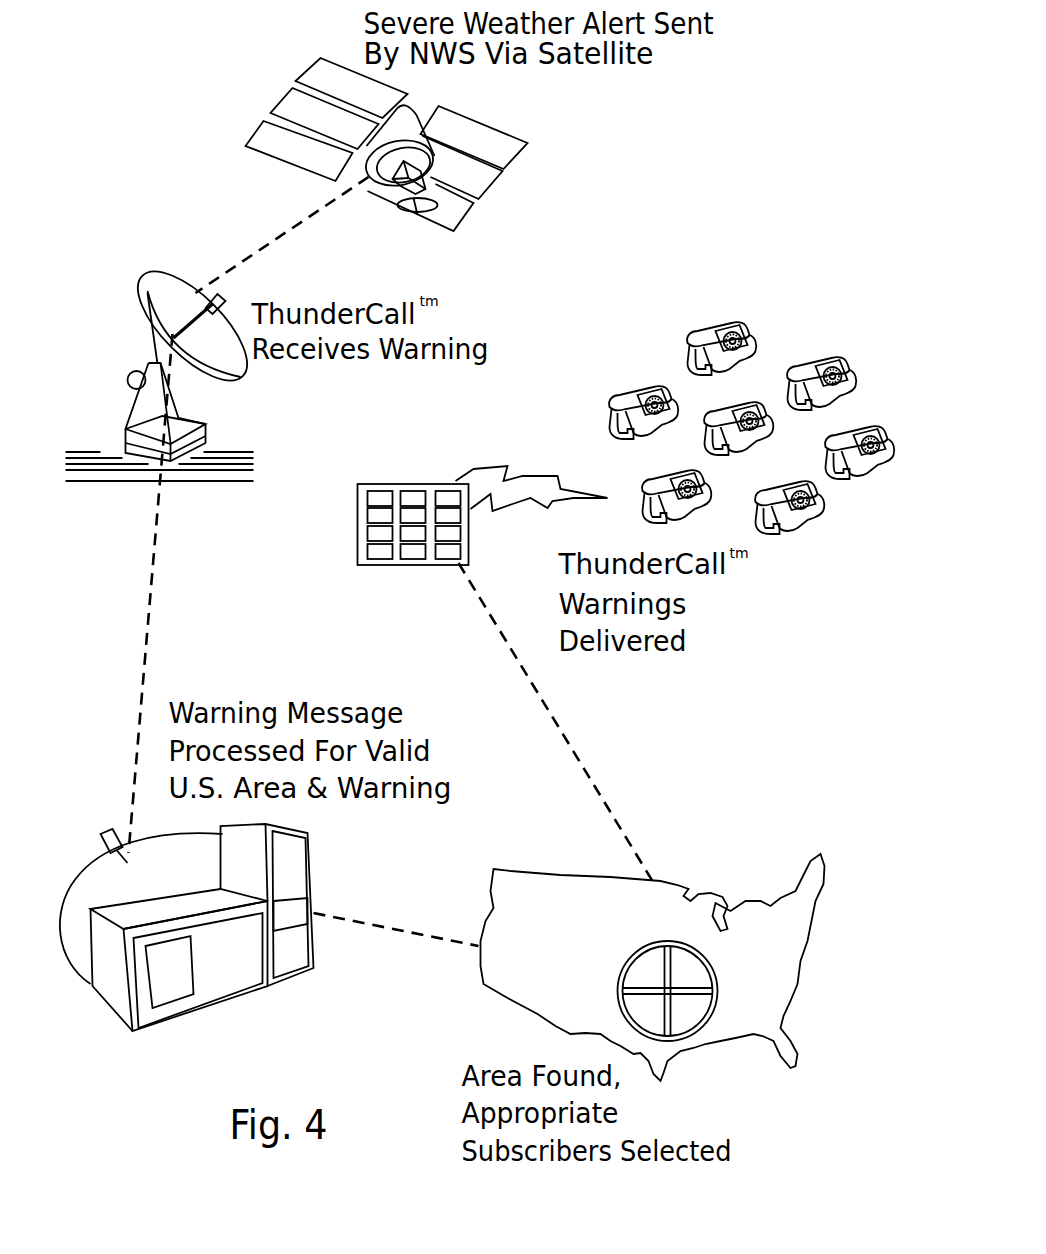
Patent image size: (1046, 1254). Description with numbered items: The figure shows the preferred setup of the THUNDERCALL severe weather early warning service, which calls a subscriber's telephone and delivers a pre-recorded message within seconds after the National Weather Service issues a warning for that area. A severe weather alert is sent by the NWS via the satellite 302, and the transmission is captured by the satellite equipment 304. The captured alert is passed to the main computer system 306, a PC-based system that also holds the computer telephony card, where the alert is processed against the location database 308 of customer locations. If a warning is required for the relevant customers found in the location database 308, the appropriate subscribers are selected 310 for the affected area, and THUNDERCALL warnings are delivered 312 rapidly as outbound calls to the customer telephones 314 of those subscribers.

The satellite 302 is at (295, 105).
The satellite equipment 304 is at (155, 282).
The main computer system 306 is at (113, 993).
The location database 308 is at (297, 958).
The selection of appropriate subscribers 310 is at (667, 1138).
The warning delivery 312 is at (408, 488).
The customer telephones 314 is at (718, 323).